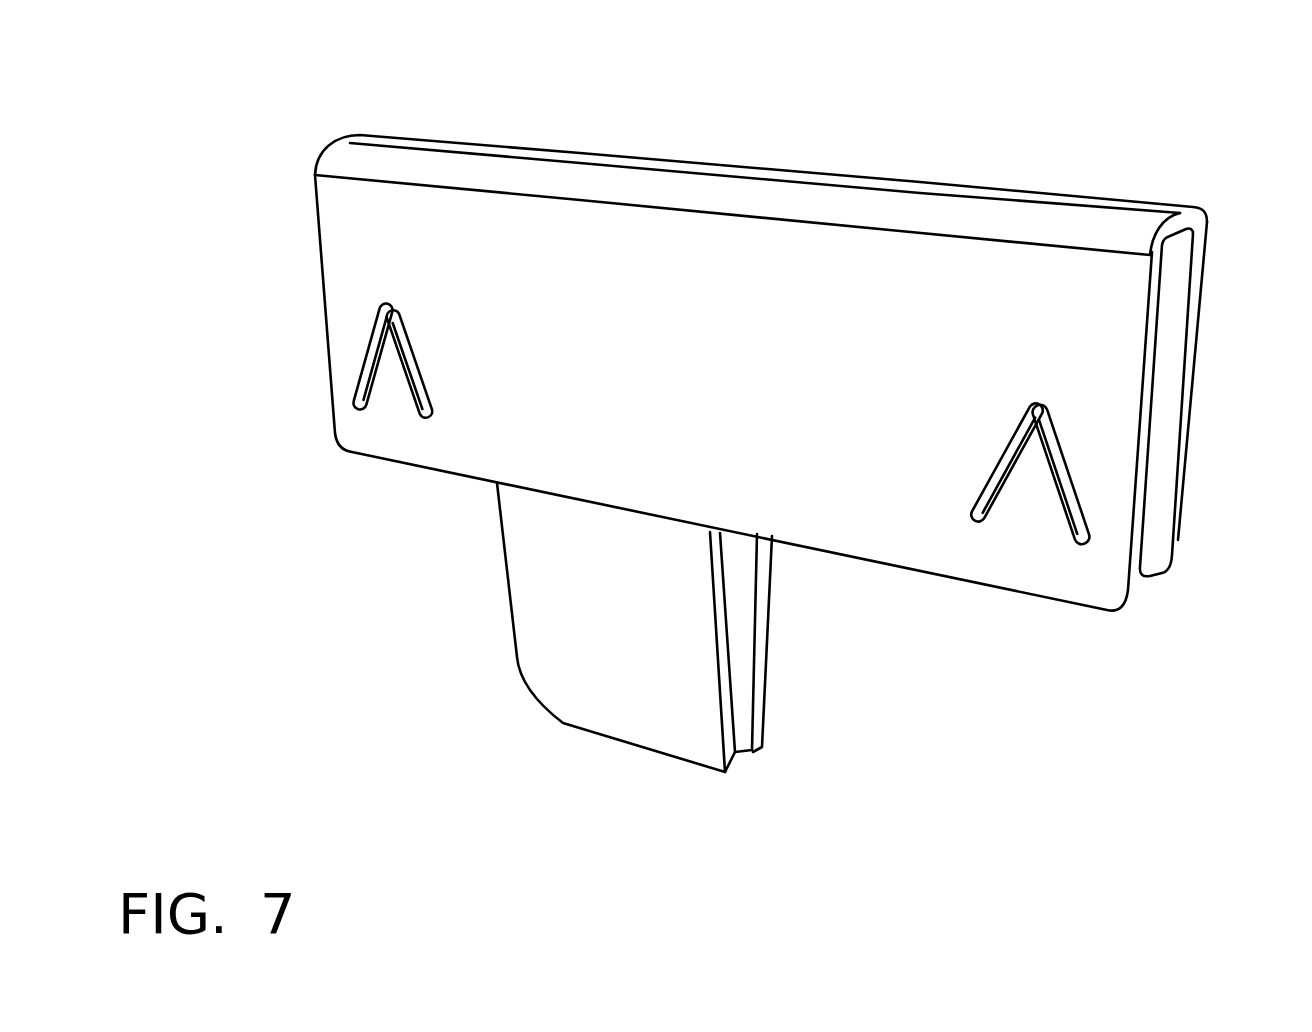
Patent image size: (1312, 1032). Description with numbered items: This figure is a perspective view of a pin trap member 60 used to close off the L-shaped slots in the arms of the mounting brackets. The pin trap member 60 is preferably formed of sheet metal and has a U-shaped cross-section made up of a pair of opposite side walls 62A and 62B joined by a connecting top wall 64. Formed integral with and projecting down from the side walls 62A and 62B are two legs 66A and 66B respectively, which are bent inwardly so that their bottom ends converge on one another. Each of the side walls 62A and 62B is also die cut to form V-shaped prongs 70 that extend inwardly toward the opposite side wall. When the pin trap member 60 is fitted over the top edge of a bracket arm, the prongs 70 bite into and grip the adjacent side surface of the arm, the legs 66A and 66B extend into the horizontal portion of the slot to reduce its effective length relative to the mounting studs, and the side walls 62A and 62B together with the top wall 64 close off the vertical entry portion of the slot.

The pin trap member 60 is at (758, 443).
The side wall 62A is at (1090, 573).
The side wall 62B is at (1163, 495).
The top wall 64 is at (861, 173).
The leg 66A is at (673, 705).
The leg 66B is at (760, 667).
The V-shaped prong 70 is at (382, 368).